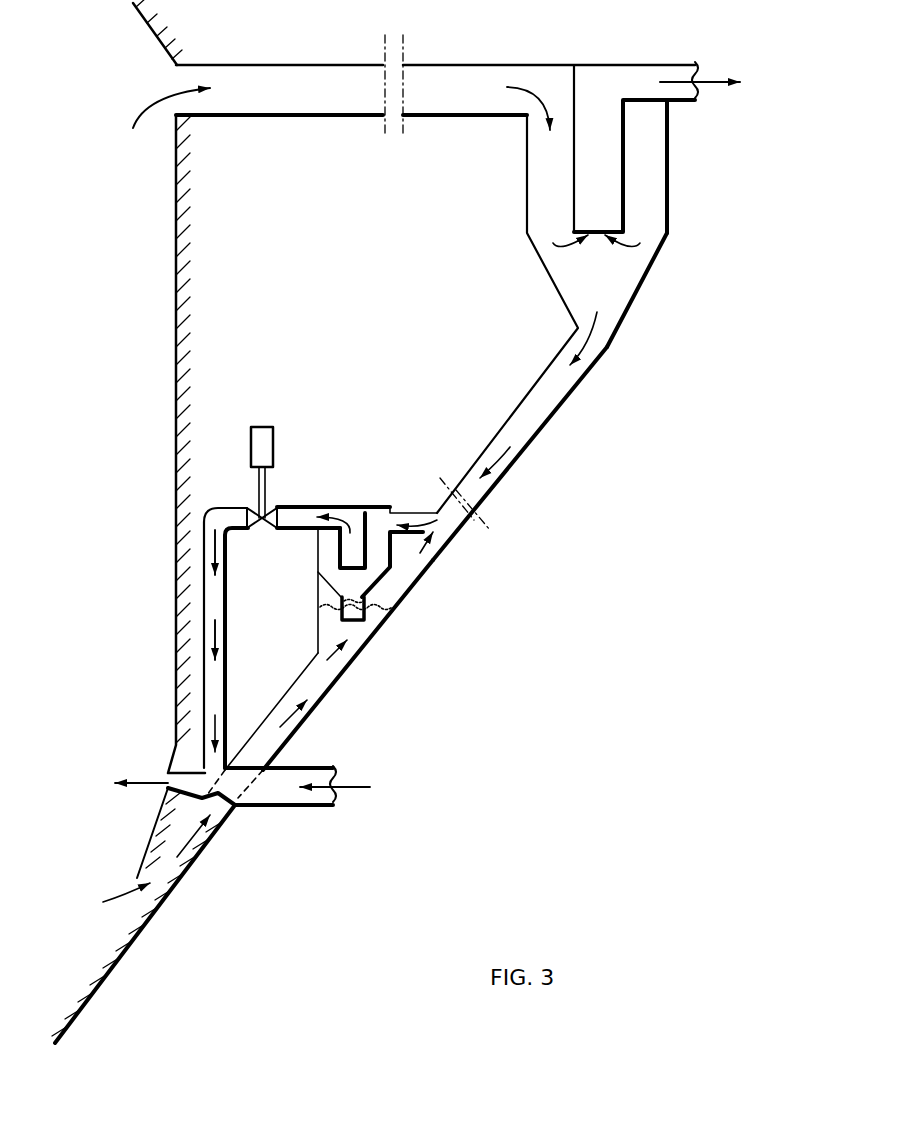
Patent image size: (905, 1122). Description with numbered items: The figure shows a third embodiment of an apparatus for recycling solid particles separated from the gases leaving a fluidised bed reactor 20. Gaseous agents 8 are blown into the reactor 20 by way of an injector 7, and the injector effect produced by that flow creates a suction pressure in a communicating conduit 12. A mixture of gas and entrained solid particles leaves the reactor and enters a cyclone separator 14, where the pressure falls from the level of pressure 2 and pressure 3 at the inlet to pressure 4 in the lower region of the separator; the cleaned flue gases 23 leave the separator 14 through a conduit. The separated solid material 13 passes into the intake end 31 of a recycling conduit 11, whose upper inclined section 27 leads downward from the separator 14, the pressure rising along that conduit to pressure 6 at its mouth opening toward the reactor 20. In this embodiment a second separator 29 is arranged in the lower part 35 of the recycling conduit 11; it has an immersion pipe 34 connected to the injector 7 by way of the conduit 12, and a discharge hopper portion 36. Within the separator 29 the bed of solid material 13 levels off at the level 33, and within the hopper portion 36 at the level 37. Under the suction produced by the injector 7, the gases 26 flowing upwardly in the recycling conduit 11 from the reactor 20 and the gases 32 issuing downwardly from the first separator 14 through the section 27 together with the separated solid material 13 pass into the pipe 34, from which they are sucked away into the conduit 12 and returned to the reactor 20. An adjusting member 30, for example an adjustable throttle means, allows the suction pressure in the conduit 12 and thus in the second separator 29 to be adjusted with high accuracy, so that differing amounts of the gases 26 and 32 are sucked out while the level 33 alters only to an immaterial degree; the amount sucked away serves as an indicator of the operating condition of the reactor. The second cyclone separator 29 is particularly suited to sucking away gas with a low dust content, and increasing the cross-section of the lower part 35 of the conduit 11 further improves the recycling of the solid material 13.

The pressure 2 is at (150, 96).
The pressure 3 is at (540, 88).
The pressure 4 is at (620, 285).
The pressure 6 is at (133, 920).
The injector 7 is at (288, 805).
The gaseous agents 8 is at (357, 785).
The recycling conduit 11 is at (330, 685).
The communicating conduit 12 is at (298, 507).
The solid material 13 is at (385, 610).
The cyclone separator 14 is at (670, 196).
The fluidised bed reactor 20 is at (143, 428).
The conduit 23 is at (676, 80).
The gases 26 is at (440, 552).
The chute section 27 is at (557, 405).
The second separator 29 is at (377, 507).
The adjusting member 30 is at (262, 427).
The intake end 31 is at (620, 330).
The gases 32 is at (578, 338).
The level 33 is at (392, 590).
The immersion pipe 34 is at (340, 552).
The lower part 35 is at (320, 703).
The discharge hopper portion 36 is at (345, 612).
The level 37 is at (350, 600).